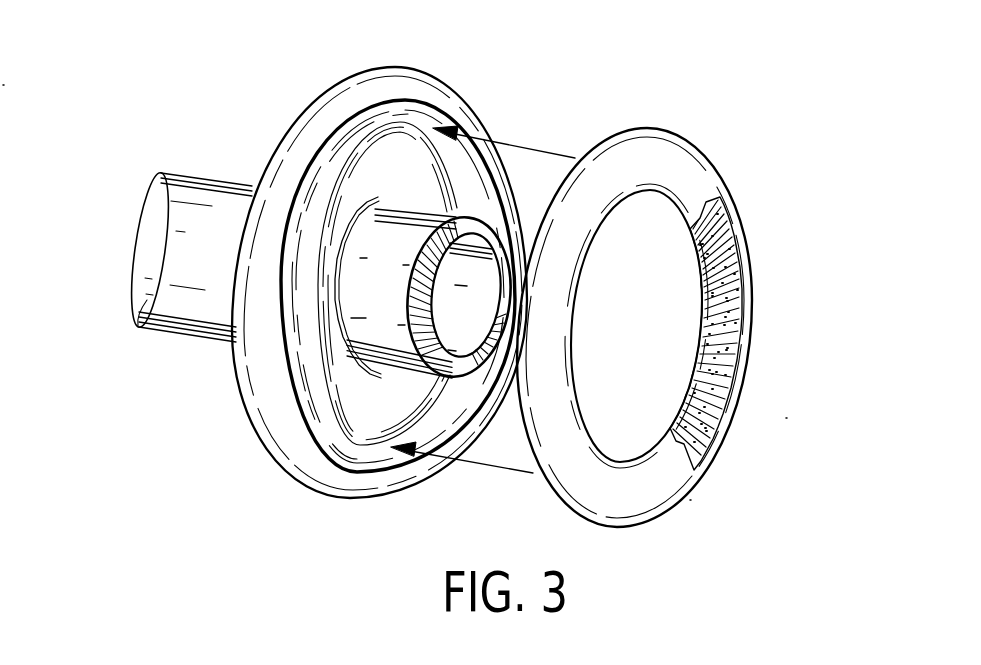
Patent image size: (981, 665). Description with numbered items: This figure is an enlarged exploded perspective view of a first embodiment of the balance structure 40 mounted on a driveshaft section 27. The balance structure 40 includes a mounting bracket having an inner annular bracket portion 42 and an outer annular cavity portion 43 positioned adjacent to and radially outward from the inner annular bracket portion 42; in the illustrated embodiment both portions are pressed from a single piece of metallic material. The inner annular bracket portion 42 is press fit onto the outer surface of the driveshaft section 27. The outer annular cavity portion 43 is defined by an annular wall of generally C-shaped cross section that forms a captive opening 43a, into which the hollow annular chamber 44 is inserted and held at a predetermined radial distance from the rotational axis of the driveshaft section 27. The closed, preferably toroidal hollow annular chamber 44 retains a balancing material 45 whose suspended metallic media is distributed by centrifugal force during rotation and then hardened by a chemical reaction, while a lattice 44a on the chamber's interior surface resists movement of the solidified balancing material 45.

The balance structure 40 is at (348, 255).
The outer annular cavity portion 43 is at (418, 75).
The captive opening 43a is at (427, 115).
The inner annular bracket portion 42 is at (408, 181).
The driveshaft section 27 is at (172, 298).
The hollow annular chamber 44 is at (686, 308).
The lattice 44a is at (737, 303).
The balancing material 45 is at (737, 367).